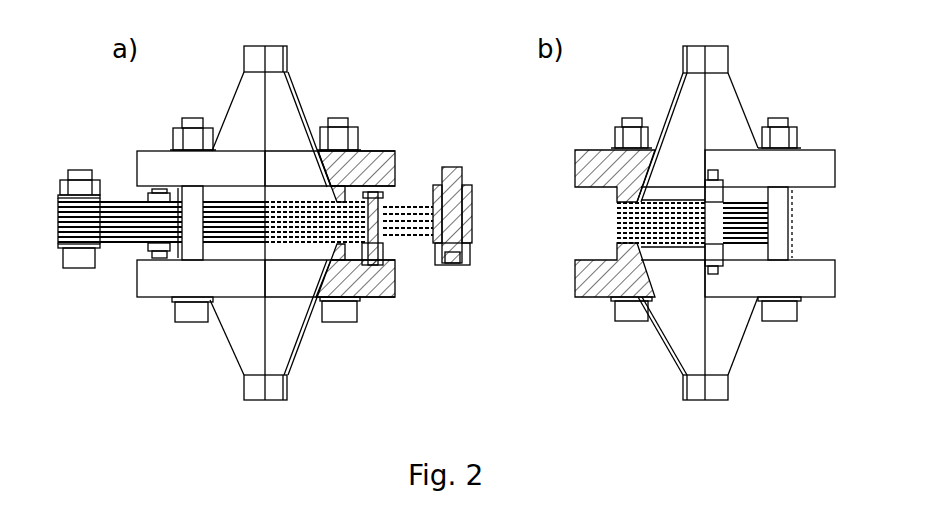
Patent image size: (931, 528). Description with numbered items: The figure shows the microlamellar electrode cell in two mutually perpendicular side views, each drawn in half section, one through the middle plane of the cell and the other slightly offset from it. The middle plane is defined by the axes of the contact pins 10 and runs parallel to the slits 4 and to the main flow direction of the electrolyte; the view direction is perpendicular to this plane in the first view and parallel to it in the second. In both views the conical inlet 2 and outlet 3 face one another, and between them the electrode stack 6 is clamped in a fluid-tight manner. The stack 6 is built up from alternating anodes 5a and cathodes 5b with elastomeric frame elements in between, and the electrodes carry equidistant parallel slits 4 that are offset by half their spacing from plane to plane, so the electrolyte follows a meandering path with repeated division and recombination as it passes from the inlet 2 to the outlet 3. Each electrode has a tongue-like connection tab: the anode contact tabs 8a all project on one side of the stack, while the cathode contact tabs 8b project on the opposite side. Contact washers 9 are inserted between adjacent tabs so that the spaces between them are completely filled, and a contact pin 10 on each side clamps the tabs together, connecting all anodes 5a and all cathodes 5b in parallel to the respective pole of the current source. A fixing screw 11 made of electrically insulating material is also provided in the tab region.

The inlet 2 is at (484, 330).
The outlet 3 is at (485, 223).
The opening/slit in electrode 4 is at (653, 245).
The anode 5a is at (218, 203).
The cathode 5b is at (325, 203).
The electrode stack 6 is at (803, 203).
The anode contact tab 8a is at (130, 247).
The cathode contact tab 8b is at (408, 256).
The contact washer 9 is at (90, 240).
The contact pin 10 is at (450, 167).
The fixing screw made of electrically insulating material 11 is at (375, 263).